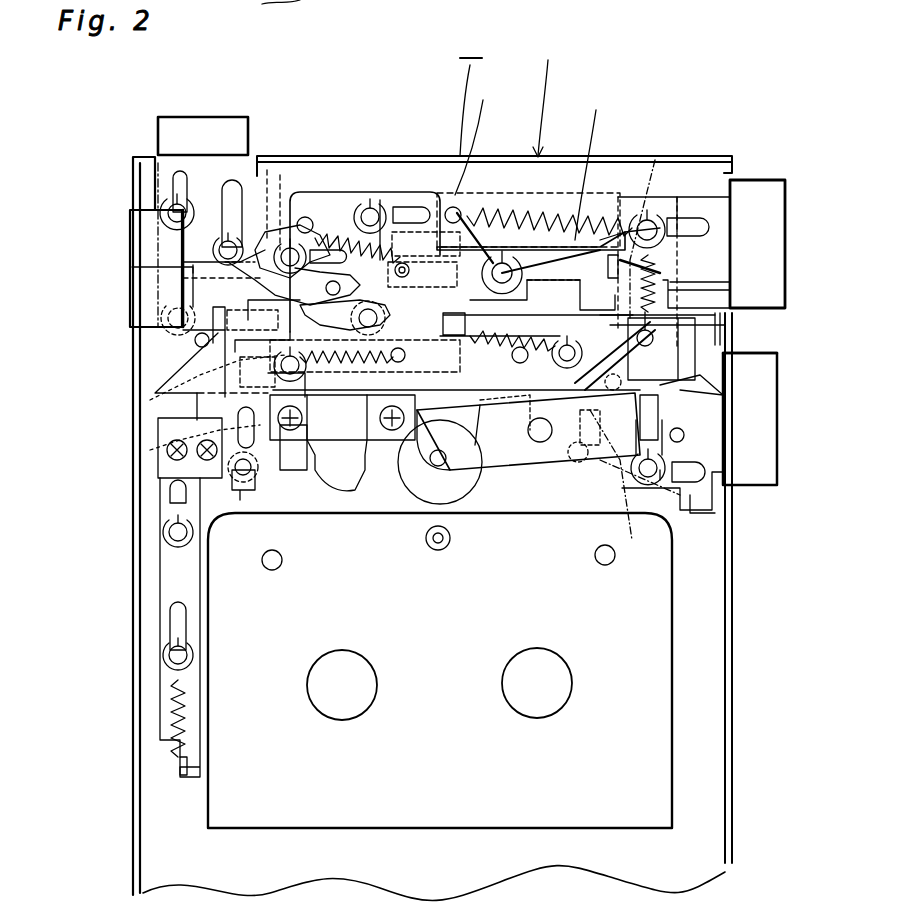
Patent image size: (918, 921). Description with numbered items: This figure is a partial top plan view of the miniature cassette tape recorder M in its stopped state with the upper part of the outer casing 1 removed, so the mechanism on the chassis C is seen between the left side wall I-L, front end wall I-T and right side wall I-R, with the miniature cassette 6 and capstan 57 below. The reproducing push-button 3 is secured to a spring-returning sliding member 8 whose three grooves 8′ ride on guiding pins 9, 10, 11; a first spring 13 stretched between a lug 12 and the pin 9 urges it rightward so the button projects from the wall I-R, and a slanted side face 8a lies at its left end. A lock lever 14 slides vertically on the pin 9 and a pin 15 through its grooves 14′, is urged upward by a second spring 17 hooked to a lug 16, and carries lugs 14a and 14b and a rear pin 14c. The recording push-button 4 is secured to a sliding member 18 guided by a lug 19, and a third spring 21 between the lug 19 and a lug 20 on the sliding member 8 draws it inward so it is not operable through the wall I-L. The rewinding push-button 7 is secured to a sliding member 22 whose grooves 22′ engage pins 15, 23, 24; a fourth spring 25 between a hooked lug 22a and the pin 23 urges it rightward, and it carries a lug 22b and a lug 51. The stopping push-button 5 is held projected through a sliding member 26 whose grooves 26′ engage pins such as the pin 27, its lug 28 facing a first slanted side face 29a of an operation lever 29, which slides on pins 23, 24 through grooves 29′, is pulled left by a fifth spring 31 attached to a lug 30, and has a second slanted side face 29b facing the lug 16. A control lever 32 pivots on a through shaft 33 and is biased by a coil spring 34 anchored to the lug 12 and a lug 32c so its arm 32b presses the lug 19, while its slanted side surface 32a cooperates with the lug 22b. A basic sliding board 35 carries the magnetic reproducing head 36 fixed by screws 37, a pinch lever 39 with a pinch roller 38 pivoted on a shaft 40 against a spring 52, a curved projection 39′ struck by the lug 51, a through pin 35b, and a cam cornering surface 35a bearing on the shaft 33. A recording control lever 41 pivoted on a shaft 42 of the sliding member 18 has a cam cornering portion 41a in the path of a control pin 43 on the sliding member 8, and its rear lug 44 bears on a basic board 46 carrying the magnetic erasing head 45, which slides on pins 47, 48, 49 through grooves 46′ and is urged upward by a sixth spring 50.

The left side wall I-L is at (133, 675).
The front end wall I-T is at (322, 156).
The right side wall I-R is at (750, 322).
The outer casing 1 is at (540, 96).
The miniature cassette tape recorder M is at (267, 10).
The chassis C is at (471, 95).
The reproducing push-button 3 is at (755, 188).
The recording push-button 4 is at (140, 215).
The stopping push-button 5 is at (215, 120).
The miniature cassette 6 is at (650, 700).
The rewinding push-button 7 is at (775, 355).
The sliding member 8 is at (690, 200).
The grooves 8′ is at (330, 220).
The slanted side face 8a is at (182, 262).
The guiding pin 9 is at (645, 215).
The guiding pin 10 is at (380, 200).
The guiding pin 11 is at (287, 240).
The lug 12 is at (476, 138).
The first spring 13 is at (597, 161).
The lock lever 14 is at (700, 303).
The grooves 14′ is at (665, 175).
The lug 14a is at (636, 265).
The lug 14b is at (630, 489).
The rear pin 14c is at (655, 395).
The guiding pin 15 is at (655, 480).
The lug 16 is at (680, 337).
The second spring 17 is at (660, 268).
The sliding member 18 is at (182, 278).
The lug 19 is at (402, 262).
The lug 20 is at (305, 218).
The third spring 21 is at (370, 210).
The sliding member 22 is at (720, 390).
The grooves 22′ is at (700, 483).
The hooked lug 22a is at (512, 356).
The lug 22b is at (640, 337).
The guiding pin 23 is at (618, 380).
The guiding pin 24 is at (292, 372).
The fourth spring 25 is at (520, 348).
The sliding member 26 is at (235, 190).
The grooves 26′ is at (178, 180).
The guiding pin 27 is at (168, 205).
The lug 28 is at (194, 341).
The operation lever 29 is at (150, 400).
The grooves 29′ is at (150, 450).
The first slanted side face 29a is at (155, 393).
The second slanted side face 29b is at (750, 365).
The lug 30 is at (398, 362).
The fifth spring 31 is at (365, 440).
The control lever 32 is at (572, 255).
The slanted side surface 32a is at (605, 245).
The arm 32b is at (455, 170).
The lug 32c is at (550, 245).
The shaft 33 is at (540, 282).
The coil spring 34 is at (490, 215).
The basic sliding board 35 is at (456, 450).
The cam cornering surface 35a is at (505, 262).
The pin 35b is at (583, 462).
The magnetic reproducing head 36 is at (325, 490).
The screws 37 is at (300, 440).
The pinch roller 38 is at (420, 500).
The pinch lever 39 is at (528, 440).
The curved projection 39′ is at (705, 418).
The shaft 40 is at (585, 460).
The recording control lever 41 is at (270, 283).
The cam cornering portion 41a is at (290, 315).
The shaft 42 is at (336, 289).
The control pin 43 is at (340, 240).
The rear lug 44 is at (290, 248).
The magnetic erasing head 45 is at (245, 490).
The basic board 46 is at (172, 445).
The grooves 46′ is at (170, 465).
The guiding pin 47 is at (235, 470).
The guiding pin 48 is at (170, 536).
The guiding pin 49 is at (188, 645).
The sixth spring 50 is at (186, 703).
The lug 51 is at (700, 440).
The spring 52 is at (485, 420).
The capstan 57 is at (438, 552).